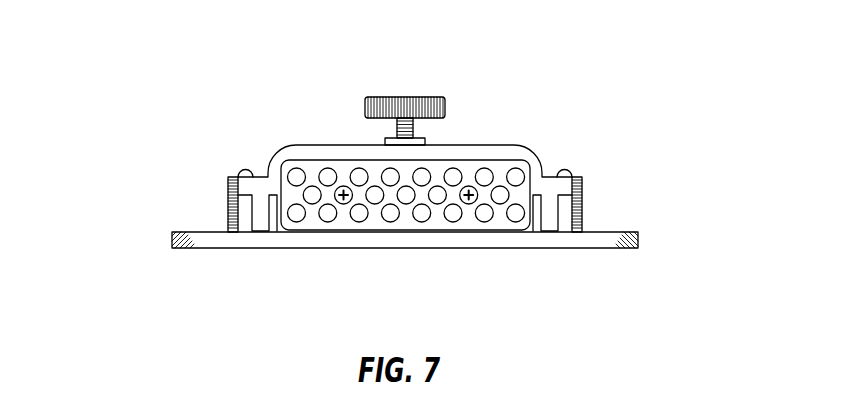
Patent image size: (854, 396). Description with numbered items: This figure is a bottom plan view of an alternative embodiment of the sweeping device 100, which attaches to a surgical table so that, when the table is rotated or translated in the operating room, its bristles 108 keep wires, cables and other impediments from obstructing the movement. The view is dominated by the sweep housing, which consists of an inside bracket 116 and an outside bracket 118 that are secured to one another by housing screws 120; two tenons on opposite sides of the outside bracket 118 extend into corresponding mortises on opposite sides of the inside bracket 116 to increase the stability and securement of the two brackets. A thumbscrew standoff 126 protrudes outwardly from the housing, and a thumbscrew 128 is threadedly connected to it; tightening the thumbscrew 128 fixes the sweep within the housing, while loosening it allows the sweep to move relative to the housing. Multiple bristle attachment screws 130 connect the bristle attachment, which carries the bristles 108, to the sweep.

The sweeping device 100 is at (153, 72).
The bristles 108 is at (325, 169).
The inside bracket 116 is at (596, 249).
The outside bracket 118 is at (525, 148).
The housing screws 120 is at (236, 172).
The thumbscrew standoff 126 is at (425, 141).
The thumbscrew 128 is at (430, 94).
The bristle attachment screws 130 is at (341, 204).